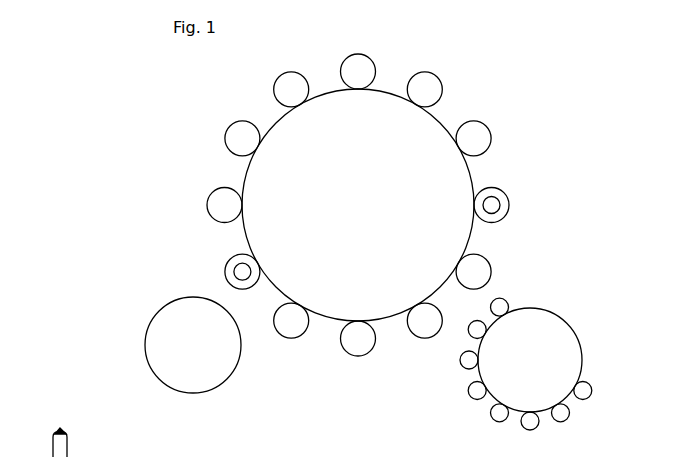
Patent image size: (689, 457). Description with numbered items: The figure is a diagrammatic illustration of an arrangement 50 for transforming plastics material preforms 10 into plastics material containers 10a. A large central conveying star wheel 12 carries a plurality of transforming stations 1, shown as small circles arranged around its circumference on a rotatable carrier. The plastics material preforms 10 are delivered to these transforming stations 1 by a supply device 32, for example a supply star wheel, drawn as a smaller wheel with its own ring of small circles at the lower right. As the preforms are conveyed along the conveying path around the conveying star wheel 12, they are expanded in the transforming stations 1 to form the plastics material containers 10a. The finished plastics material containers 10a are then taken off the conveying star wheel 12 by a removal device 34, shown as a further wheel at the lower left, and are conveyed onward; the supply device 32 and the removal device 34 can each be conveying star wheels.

The transforming station 1 is at (240, 142).
The arrangement 50 is at (197, 183).
The plastics material preform 10 is at (493, 205).
The plastics material container 10a is at (243, 278).
The conveying star wheel 12 is at (440, 197).
The supply device 32 is at (527, 352).
The removal device 34 is at (200, 363).